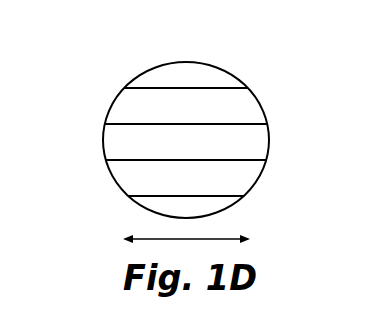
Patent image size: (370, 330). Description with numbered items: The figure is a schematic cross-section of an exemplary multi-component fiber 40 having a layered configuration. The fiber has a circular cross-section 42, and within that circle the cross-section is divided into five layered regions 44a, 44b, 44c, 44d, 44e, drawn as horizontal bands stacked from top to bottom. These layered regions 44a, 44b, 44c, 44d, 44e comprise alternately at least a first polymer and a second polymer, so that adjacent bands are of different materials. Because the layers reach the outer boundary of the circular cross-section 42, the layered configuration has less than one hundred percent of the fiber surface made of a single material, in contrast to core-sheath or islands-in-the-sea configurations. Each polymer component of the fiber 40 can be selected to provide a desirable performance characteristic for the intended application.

The multi-component fiber 40 is at (150, 52).
The width dimension 42 is at (221, 238).
The first stripe 44a is at (210, 73).
The second stripe 44b is at (130, 101).
The third stripe 44c is at (253, 137).
The fourth stripe 44d is at (128, 175).
The fifth stripe 44e is at (150, 204).